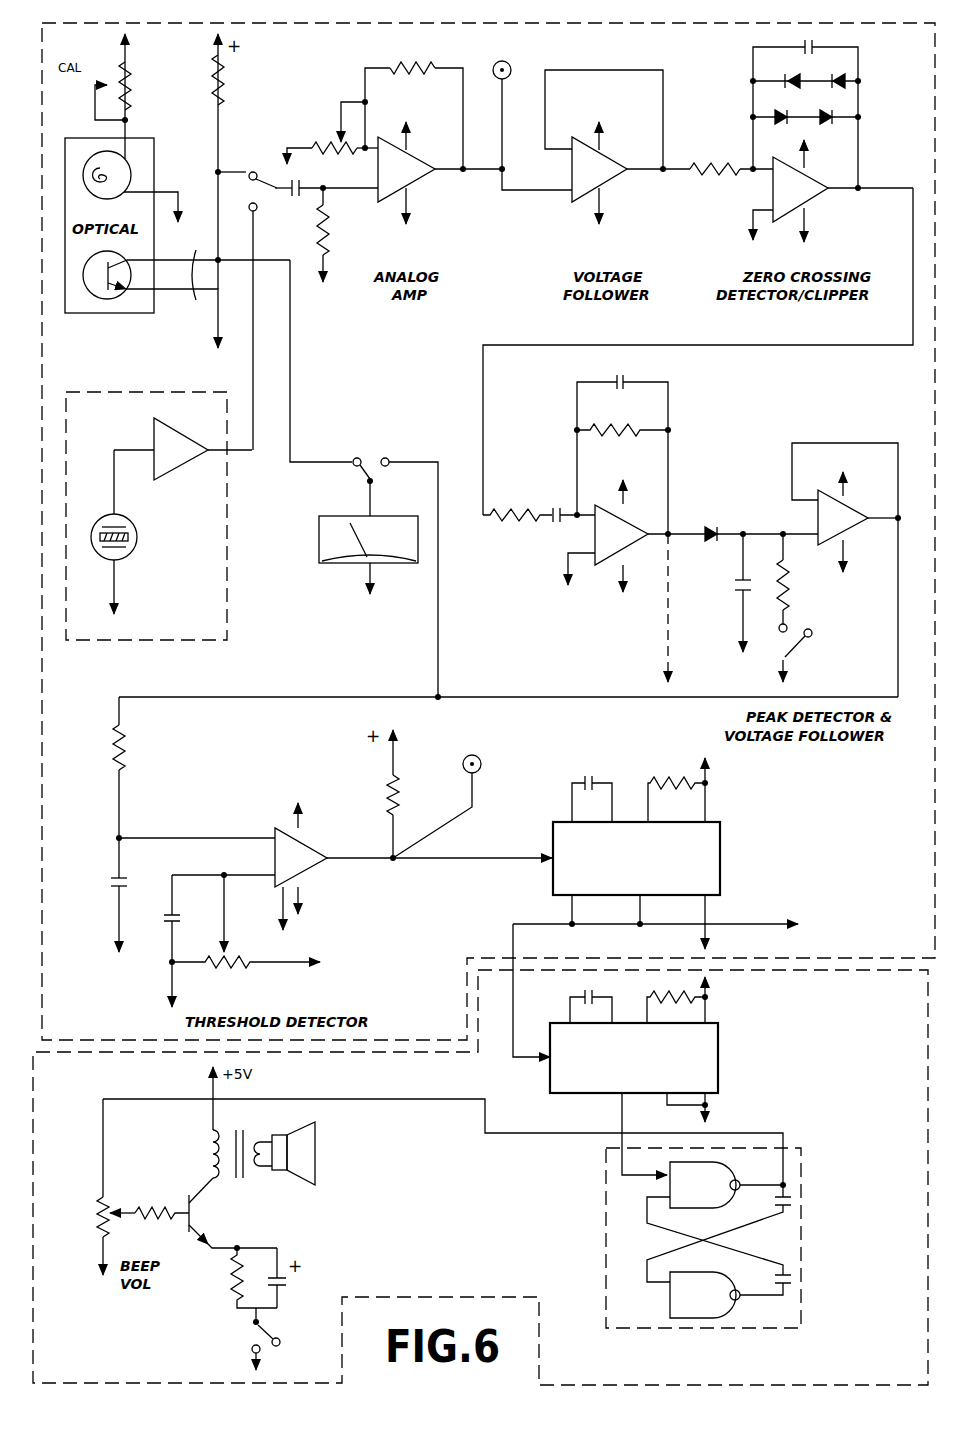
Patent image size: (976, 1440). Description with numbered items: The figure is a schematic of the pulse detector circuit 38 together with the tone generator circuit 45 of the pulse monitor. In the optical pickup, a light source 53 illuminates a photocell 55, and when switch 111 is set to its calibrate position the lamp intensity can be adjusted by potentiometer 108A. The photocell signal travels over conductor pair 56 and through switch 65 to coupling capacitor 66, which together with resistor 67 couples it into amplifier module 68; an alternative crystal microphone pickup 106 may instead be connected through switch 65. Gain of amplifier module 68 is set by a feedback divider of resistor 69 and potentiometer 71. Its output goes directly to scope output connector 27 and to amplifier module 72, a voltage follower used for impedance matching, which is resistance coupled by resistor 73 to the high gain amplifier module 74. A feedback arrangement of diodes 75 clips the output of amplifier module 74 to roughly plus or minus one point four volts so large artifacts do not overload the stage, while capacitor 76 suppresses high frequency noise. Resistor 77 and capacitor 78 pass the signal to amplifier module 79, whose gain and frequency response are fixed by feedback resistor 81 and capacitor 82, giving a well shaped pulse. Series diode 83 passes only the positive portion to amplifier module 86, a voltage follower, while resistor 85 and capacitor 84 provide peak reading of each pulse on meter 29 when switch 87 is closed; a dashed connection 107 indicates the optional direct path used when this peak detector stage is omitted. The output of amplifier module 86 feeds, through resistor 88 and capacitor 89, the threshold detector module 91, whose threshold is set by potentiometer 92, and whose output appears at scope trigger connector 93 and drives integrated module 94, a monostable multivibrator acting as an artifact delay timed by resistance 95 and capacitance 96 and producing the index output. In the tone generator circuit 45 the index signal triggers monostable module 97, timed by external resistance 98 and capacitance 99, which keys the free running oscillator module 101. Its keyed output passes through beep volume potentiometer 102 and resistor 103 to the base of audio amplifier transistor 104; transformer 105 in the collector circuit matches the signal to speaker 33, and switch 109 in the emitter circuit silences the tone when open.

The potentiometer 108A is at (130, 82).
The light source 53 is at (133, 178).
The photocell 55 is at (101, 298).
The conductor pair 56 is at (190, 305).
The switch 65 is at (271, 182).
The coupling capacitor 66 is at (326, 201).
The resistor 67 is at (325, 246).
The amplifier module 68 is at (422, 180).
The resistor 69 is at (418, 68).
The potentiometer 71 is at (320, 144).
The scope output connector 27 is at (509, 66).
The amplifier module 72 is at (622, 180).
The resistor 73 is at (714, 178).
The amplifier module 74 is at (824, 199).
The diodes 75 is at (835, 115).
The capacitor 76 is at (804, 52).
The resistor 77 is at (515, 525).
The capacitor 78 is at (549, 510).
The amplifier module 79 is at (630, 562).
The resistor 81 is at (608, 429).
The capacitor 82 is at (627, 386).
The series diode 83 is at (755, 523).
The capacitor 84 is at (735, 588).
The resistor 85 is at (790, 584).
The amplifier module 86 is at (848, 538).
The switch 87 is at (796, 661).
The peak detector connection 107 is at (660, 626).
The additional pickup 106 is at (227, 572).
The switch 111 is at (352, 458).
The meter 29 is at (385, 516).
The resistor 88 is at (125, 754).
The capacitor 89 is at (112, 885).
The solid state module 91 is at (320, 872).
The potentiometer 92 is at (231, 976).
The output connector 93 is at (480, 766).
The integrated module 94 is at (720, 875).
The external resistance 95 is at (672, 780).
The external capacitance 96 is at (585, 776).
The pulse detector circuit 38 is at (870, 955).
The tone generator circuit 45 is at (815, 970).
The solid state module 97 is at (718, 1075).
The external resistance 98 is at (659, 998).
The timing capacitor 99 is at (582, 995).
The oscillator module 101 is at (801, 1190).
The potentiometer 102 is at (100, 1213).
The resistor 103 is at (166, 1200).
The transistor 104 is at (193, 1213).
The transformer 105 is at (210, 1150).
The speaker 33 is at (317, 1146).
The switch 109 is at (272, 1341).